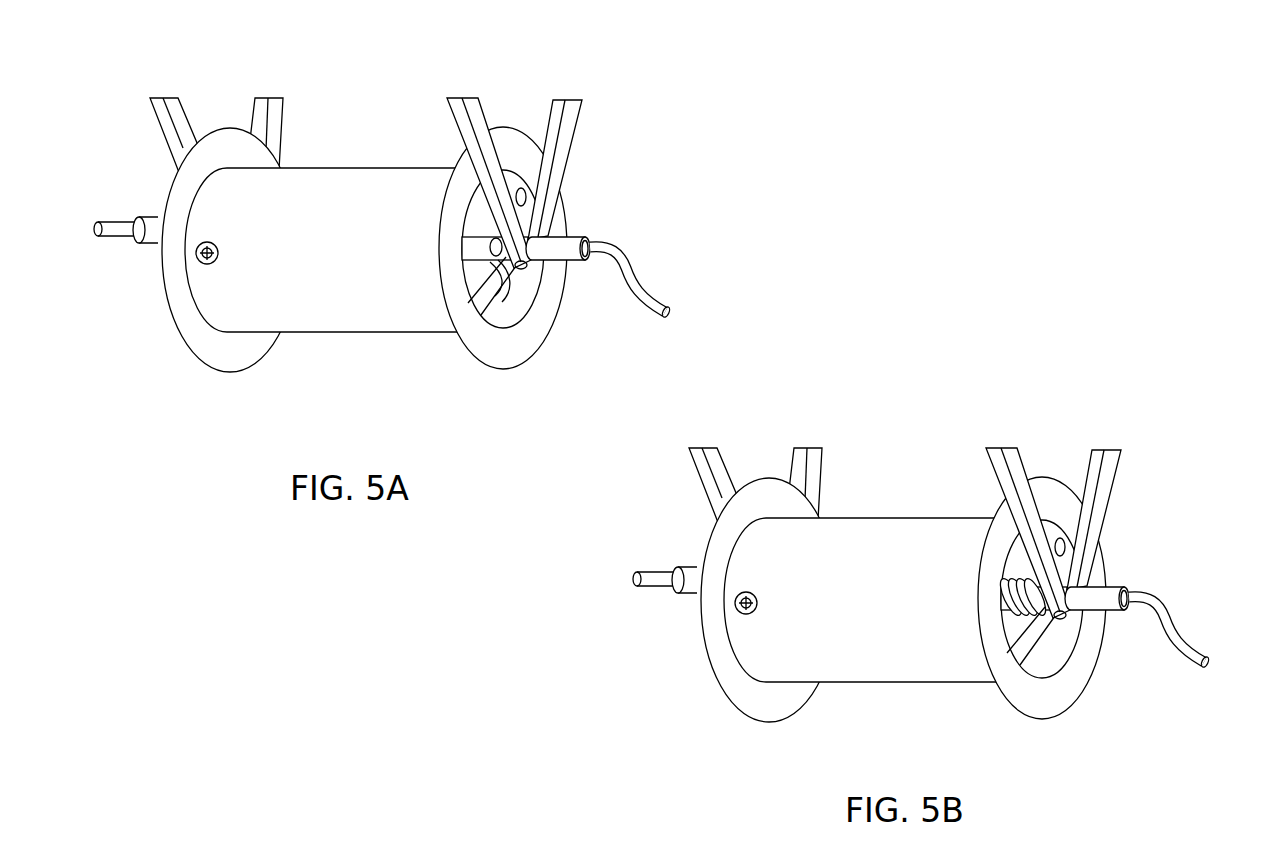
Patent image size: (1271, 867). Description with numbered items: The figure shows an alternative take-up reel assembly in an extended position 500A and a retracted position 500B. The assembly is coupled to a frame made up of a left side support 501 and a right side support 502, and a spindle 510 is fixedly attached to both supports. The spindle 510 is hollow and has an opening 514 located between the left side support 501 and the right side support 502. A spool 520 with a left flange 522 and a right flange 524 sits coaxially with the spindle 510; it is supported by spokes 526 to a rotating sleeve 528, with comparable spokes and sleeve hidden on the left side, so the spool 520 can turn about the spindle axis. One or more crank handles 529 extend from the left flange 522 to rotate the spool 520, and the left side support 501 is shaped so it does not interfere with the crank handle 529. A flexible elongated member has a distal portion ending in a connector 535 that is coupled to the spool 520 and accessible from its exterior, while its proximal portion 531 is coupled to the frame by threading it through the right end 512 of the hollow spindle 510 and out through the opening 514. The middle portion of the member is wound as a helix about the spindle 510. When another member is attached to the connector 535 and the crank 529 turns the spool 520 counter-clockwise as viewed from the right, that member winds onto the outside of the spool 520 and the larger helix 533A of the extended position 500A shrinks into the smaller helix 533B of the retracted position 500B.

In FIG. 5A, the take-up reel assembly in extended position 500A is at (677, 113).
In FIG. 5B, the take-up reel assembly in retracted position 500B is at (1095, 383).
In FIG. 5A, the left side support 501 is at (140, 108).
In FIG. 5B, the left side support 501 is at (810, 433).
In FIG. 5A, the right side support 502 is at (438, 100).
In FIG. 5B, the right side support 502 is at (975, 450).
In FIG. 5A, the spindle 510 is at (567, 242).
In FIG. 5B, the spindle 510 is at (1103, 592).
In FIG. 5A, the right end of the hollow spindle 512 is at (582, 261).
In FIG. 5B, the right end of the hollow spindle 512 is at (1120, 611).
In FIG. 5A, the opening in the spindle 514 is at (487, 242).
In FIG. 5B, the opening in the spindle 514 is at (1038, 612).
In FIG. 5A, the spool 520 is at (373, 343).
In FIG. 5B, the spool 520 is at (910, 692).
In FIG. 5A, the left flange 522 is at (177, 305).
In FIG. 5B, the left flange 522 is at (712, 654).
In FIG. 5A, the right flange 524 is at (517, 143).
In FIG. 5B, the right flange 524 is at (1053, 493).
In FIG. 5A, the spokes 526 is at (487, 280).
In FIG. 5B, the spokes 526 is at (1023, 635).
In FIG. 5A, the rotating sleeve 528 is at (520, 264).
In FIG. 5B, the rotating sleeve 528 is at (1058, 617).
In FIG. 5A, the crank handle 529 is at (118, 227).
In FIG. 5B, the crank handle 529 is at (655, 576).
In FIG. 5A, the proximal portion of the FEM 531 is at (660, 300).
In FIG. 5B, the proximal portion of the FEM 531 is at (1193, 647).
In FIG. 5A, the helix in extended position 533A is at (502, 300).
In FIG. 5B, the helix in retracted position 533B is at (1003, 580).
In FIG. 5A, the connector 535 is at (217, 267).
In FIG. 5B, the connector 535 is at (755, 617).